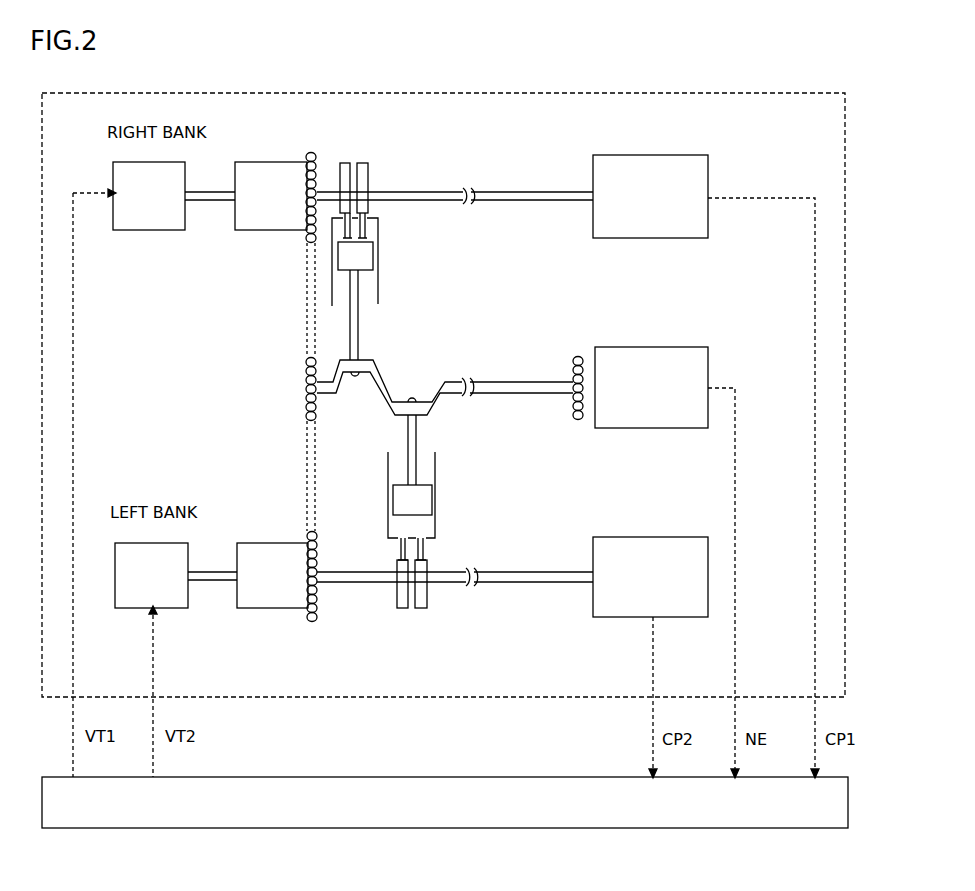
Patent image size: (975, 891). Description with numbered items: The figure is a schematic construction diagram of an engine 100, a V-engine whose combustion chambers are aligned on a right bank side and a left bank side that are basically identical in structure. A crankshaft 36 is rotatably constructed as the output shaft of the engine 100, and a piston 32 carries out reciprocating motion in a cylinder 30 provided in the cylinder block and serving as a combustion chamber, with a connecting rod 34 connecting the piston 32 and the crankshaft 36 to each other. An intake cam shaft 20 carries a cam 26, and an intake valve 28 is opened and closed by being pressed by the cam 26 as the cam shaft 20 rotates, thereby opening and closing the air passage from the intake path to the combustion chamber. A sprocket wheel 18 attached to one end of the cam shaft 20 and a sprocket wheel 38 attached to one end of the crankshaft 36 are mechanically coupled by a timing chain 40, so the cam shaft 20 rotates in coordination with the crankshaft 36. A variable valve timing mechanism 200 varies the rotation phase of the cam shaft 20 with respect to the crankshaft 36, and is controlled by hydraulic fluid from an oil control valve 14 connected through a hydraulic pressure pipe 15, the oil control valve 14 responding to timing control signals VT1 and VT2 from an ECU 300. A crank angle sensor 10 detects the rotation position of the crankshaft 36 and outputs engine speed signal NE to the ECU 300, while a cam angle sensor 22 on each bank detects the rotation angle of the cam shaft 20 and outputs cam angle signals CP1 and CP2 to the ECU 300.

The engine 100 is at (731, 93).
The crank angle sensor 10 is at (610, 430).
The oil control valve 14 is at (170, 232).
The hydraulic pressure pipe 15 is at (212, 190).
The sprocket wheel 18 is at (305, 230).
The intake cam shaft 20 is at (423, 202).
The cam angle sensor 22 is at (612, 240).
The cam 26 is at (350, 162).
The intake valve 28 is at (367, 213).
The cylinder 30 is at (380, 300).
The piston 32 is at (365, 271).
The connecting rod 34 is at (360, 320).
The crankshaft 36 is at (381, 390).
The sprocket wheel 38 is at (305, 393).
The timing chain 40 is at (305, 325).
The variable valve timing mechanism 200 is at (250, 232).
The ECU 300 is at (708, 830).